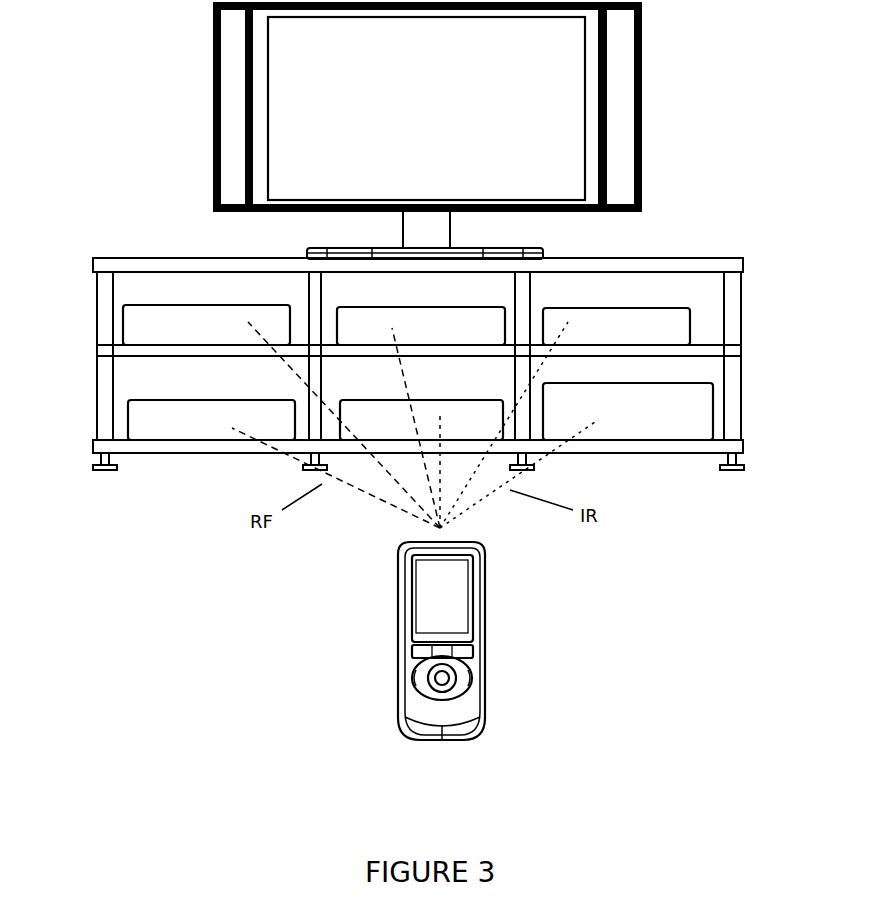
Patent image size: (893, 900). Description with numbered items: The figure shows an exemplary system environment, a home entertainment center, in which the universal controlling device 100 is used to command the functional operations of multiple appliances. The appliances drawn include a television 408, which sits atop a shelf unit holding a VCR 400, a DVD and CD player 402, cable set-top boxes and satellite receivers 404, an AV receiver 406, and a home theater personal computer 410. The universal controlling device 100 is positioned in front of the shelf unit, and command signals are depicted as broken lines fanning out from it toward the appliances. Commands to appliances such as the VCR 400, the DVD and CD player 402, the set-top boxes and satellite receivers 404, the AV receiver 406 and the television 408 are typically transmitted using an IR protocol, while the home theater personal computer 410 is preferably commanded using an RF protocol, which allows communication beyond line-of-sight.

The universal controlling device 100 is at (397, 627).
The VCR 400 is at (338, 305).
The DVD and CD player 402 is at (476, 398).
The cable set-top box and satellite receiver 404 is at (123, 332).
The AV receiver 406 is at (714, 418).
The television 408 is at (212, 76).
The home theater personal computer 410 is at (128, 418).